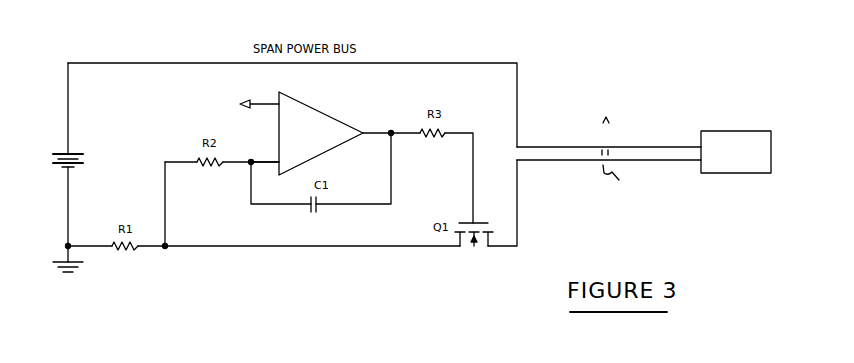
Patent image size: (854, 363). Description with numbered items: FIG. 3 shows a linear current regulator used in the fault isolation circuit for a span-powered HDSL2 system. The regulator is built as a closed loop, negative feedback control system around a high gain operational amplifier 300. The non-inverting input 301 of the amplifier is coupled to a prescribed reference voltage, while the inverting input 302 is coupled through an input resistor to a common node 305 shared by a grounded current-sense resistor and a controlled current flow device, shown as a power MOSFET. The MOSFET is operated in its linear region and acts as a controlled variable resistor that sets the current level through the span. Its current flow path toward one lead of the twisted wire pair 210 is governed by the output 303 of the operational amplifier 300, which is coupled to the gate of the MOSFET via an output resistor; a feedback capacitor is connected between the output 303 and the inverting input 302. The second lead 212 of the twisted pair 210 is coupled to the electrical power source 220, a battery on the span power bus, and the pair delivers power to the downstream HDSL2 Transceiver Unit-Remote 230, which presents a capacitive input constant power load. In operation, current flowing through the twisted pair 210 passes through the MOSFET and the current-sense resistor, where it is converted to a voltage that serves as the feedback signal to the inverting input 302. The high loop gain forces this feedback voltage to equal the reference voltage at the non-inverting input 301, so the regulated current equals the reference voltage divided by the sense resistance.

The electrical power source 220 is at (82, 148).
The operational amplifier 300 is at (316, 112).
The non-inverting input 301 is at (273, 104).
The inverting input 302 is at (277, 160).
The output 303 is at (367, 127).
The common node 305 is at (171, 241).
The second lead 212 is at (519, 130).
The twisted wire pair 210 is at (525, 163).
The HDSL2 Transceiver Unit-Remote 230 is at (741, 130).